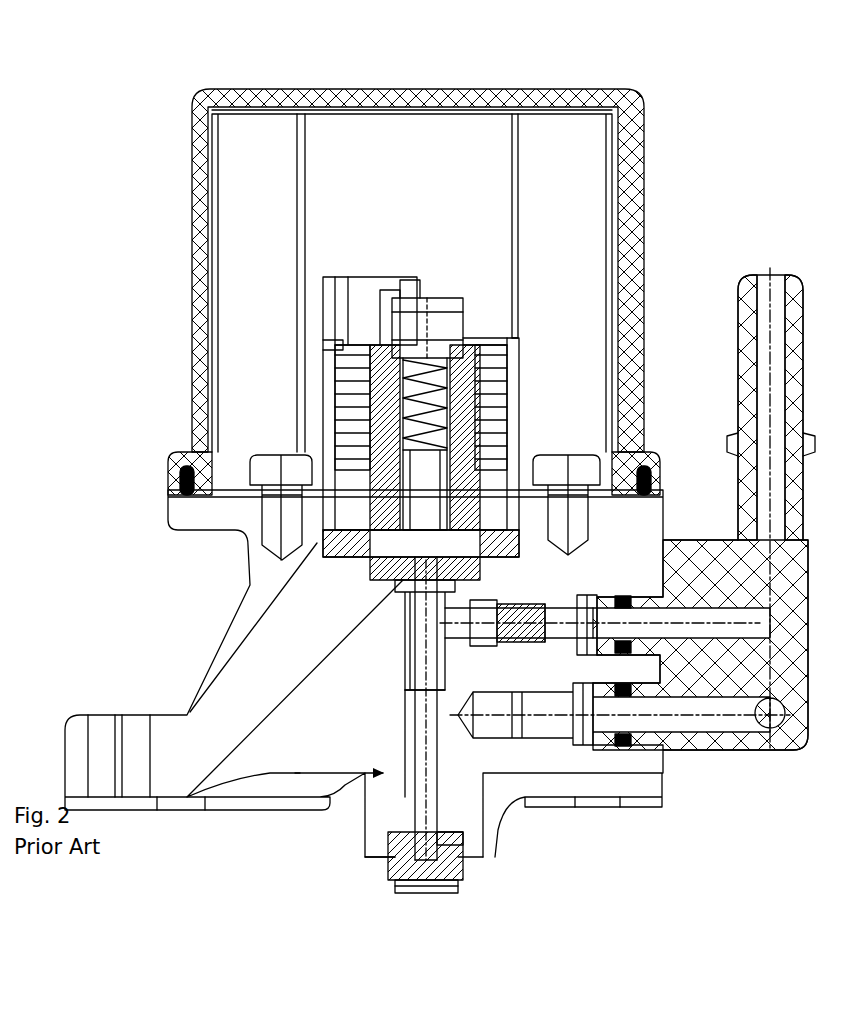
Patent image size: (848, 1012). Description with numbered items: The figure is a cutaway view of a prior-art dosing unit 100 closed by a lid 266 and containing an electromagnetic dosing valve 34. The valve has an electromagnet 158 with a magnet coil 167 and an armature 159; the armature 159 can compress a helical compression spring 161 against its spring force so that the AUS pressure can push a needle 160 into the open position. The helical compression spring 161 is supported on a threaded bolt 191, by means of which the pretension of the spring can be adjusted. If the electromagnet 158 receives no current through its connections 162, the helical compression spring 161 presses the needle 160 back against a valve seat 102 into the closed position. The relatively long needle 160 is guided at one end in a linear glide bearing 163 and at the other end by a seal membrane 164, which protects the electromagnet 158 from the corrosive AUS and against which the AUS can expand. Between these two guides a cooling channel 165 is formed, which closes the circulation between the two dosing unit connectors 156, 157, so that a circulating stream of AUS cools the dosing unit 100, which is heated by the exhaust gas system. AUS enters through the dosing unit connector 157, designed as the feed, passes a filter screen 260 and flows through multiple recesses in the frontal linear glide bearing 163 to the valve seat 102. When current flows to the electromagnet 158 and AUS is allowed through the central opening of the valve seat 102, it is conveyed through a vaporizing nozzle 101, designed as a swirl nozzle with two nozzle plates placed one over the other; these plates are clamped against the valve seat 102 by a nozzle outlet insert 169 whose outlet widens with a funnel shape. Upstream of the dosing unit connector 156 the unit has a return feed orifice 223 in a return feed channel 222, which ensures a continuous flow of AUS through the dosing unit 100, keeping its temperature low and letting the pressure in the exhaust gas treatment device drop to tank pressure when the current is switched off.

The electromagnetic dosing valve 34 is at (367, 776).
The dosing unit 100 is at (175, 578).
The vaporizing nozzle 101 is at (450, 905).
The valve seat 102 is at (468, 862).
The dosing unit connector 156 is at (655, 598).
The dosing unit connector 157 is at (660, 690).
The electromagnet 158 is at (492, 312).
The armature 159 is at (333, 538).
The needle 160 is at (430, 775).
The helical compression spring 161 is at (427, 383).
The connections 162 is at (365, 318).
The linear glide bearing 163 is at (392, 842).
The seal membrane 164 is at (404, 570).
The cooling channel 165 is at (410, 712).
The magnet coil 167 is at (338, 404).
The nozzle outlet insert 169 is at (416, 882).
The threaded bolt 191 is at (438, 327).
The return feed channel 222 is at (580, 612).
The return feed orifice 223 is at (560, 605).
The filter screen 260 is at (548, 712).
The lid 266 is at (200, 208).